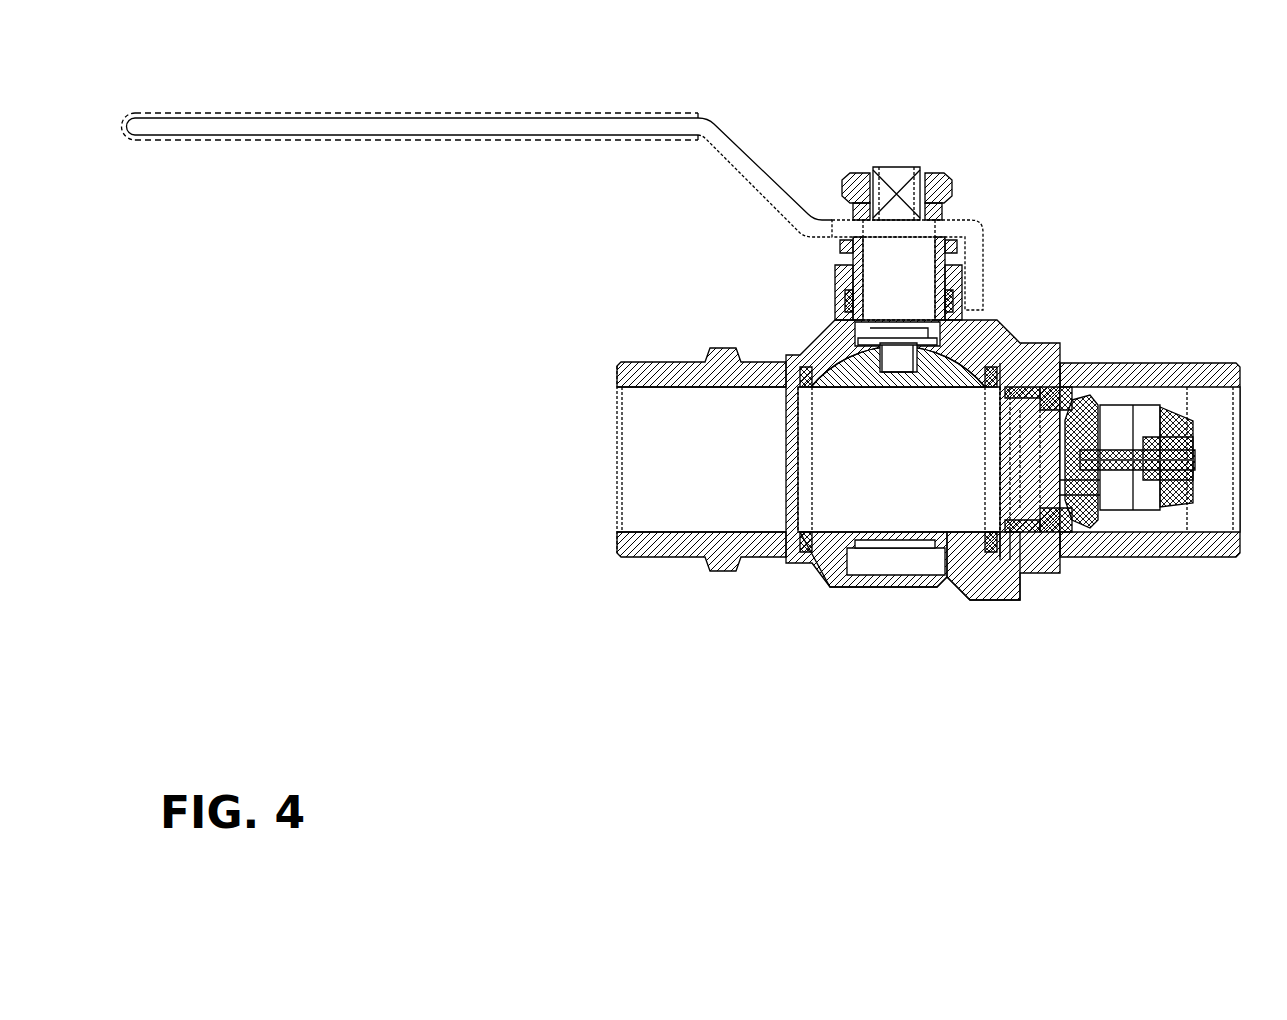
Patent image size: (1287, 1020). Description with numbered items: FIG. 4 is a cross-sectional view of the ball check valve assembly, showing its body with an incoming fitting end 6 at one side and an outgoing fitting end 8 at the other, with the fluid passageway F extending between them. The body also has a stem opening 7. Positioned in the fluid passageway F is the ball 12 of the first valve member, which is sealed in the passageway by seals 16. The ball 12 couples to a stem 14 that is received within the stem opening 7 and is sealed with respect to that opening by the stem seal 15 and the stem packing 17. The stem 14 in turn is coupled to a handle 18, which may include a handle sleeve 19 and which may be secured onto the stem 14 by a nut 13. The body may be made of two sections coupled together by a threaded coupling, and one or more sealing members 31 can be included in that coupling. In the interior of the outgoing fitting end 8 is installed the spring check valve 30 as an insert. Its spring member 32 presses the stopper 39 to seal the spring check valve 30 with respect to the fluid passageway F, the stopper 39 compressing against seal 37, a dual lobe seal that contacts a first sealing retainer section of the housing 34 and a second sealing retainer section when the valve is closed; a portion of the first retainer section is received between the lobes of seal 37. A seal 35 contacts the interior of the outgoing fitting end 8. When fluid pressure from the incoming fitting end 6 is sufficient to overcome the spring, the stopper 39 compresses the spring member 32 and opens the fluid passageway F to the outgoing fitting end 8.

The incoming fitting end 6 is at (658, 557).
The stem opening 7 is at (830, 300).
The outgoing fitting end 8 is at (1222, 365).
The ball 12 is at (812, 578).
The nut 13 is at (945, 185).
The stem 14 is at (907, 172).
The stem seal 15 is at (963, 308).
The seals 16 is at (1017, 578).
The stem packing 17 is at (965, 290).
The handle 18 is at (485, 122).
The handle sleeve 19 is at (408, 112).
The spring check valve 30 is at (1140, 493).
The sealing members 31 is at (1025, 343).
The spring member 32 is at (1140, 407).
The housing 34 is at (1100, 365).
The seal 35 is at (1060, 557).
The seal 37 is at (1098, 555).
The stopper 39 is at (1070, 455).
The fluid passageway F is at (652, 463).